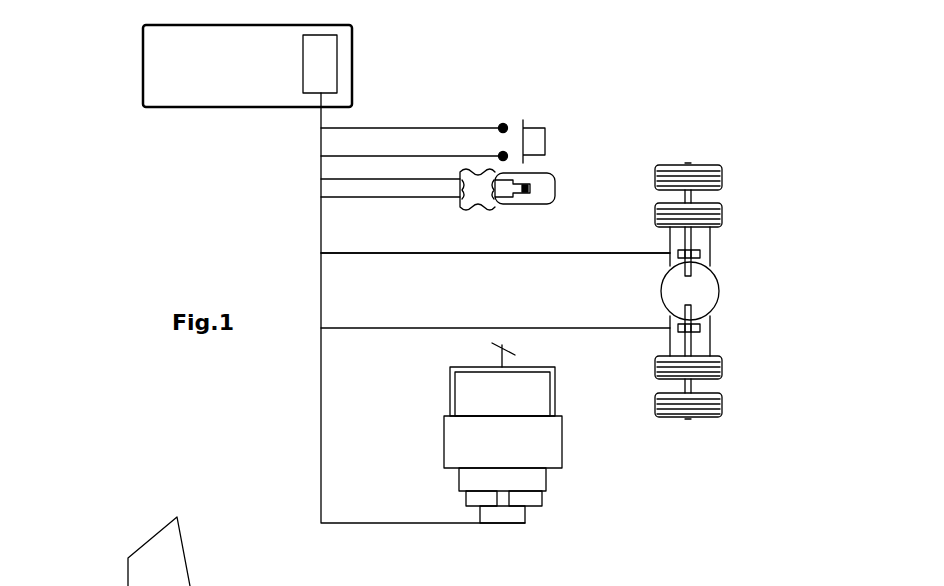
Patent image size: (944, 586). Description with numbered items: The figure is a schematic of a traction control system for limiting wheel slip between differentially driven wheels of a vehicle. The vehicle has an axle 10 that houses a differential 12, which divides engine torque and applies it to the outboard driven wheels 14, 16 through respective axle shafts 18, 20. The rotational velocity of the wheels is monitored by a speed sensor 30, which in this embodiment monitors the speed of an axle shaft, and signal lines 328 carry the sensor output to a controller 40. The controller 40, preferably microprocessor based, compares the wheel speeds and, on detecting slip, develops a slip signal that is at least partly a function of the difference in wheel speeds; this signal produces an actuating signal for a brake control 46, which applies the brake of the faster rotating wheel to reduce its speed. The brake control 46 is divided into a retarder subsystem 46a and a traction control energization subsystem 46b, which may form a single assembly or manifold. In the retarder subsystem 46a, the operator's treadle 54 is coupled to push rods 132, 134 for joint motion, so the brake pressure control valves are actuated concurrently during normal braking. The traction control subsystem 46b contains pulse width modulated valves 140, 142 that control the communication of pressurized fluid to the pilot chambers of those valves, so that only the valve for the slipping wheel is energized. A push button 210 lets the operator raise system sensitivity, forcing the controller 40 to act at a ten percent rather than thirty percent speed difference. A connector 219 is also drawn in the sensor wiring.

The axle 10 is at (724, 296).
The differential 12 is at (677, 292).
The driven wheel 14 is at (745, 187).
The driven wheel 16 is at (742, 405).
The axle shaft 18 is at (700, 254).
The axle shaft 20 is at (705, 340).
The speed sensor 30 is at (678, 252).
The controller 40 is at (128, 24).
The brake control 46 is at (488, 459).
The retarder subsystem 46a is at (545, 438).
The traction control energization subsystem 46b is at (540, 478).
The treadle 54 is at (507, 345).
The push rod 132 is at (450, 395).
The push rod 134 is at (556, 393).
The pulse width modulated valve 140 is at (472, 500).
The pulse width modulated valve 142 is at (533, 498).
The push button 210 is at (510, 105).
The connector 219 is at (577, 162).
The signal lines 328 is at (442, 253).